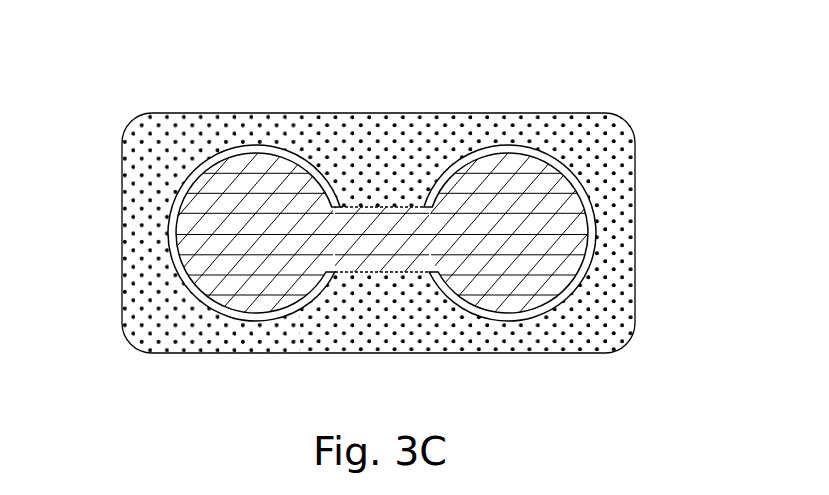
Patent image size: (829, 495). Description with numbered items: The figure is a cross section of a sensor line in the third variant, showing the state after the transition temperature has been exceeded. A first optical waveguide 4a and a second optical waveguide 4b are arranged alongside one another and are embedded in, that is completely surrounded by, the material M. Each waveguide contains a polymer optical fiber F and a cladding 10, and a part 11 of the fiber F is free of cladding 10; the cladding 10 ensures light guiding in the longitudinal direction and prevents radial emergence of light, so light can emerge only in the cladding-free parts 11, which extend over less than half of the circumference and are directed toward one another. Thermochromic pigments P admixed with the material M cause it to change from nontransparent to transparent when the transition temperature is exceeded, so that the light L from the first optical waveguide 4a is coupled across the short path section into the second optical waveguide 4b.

The material M is at (210, 125).
The thermochromic pigments P is at (293, 125).
The cladding-free part 11 is at (422, 237).
The optical fiber F is at (543, 210).
The first optical waveguide 4a is at (207, 260).
The second optical waveguide 4b is at (543, 257).
The cladding 10 is at (253, 327).
The light L is at (390, 273).